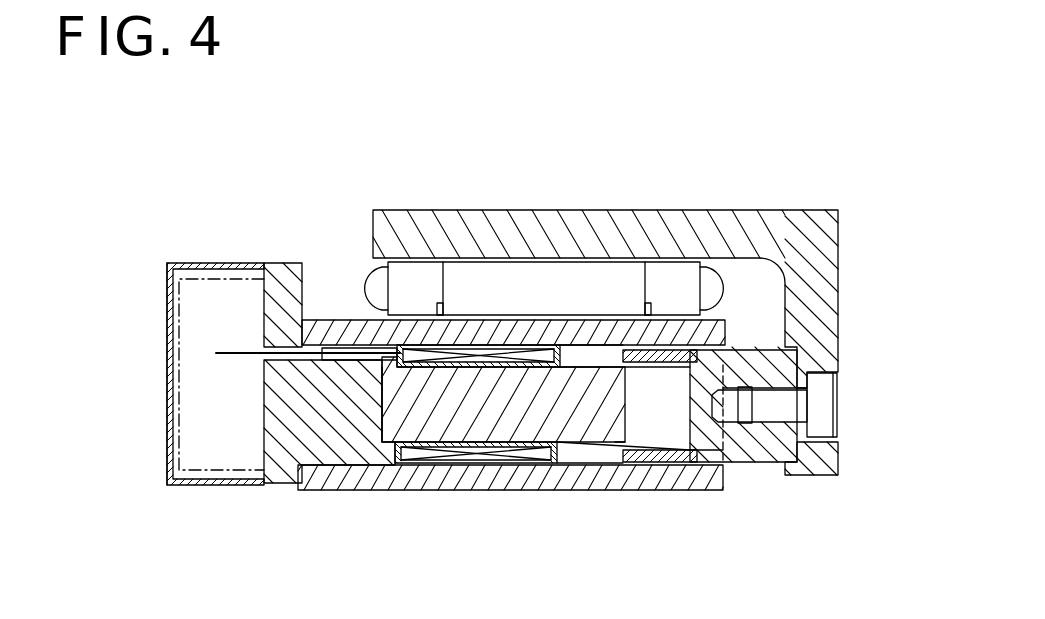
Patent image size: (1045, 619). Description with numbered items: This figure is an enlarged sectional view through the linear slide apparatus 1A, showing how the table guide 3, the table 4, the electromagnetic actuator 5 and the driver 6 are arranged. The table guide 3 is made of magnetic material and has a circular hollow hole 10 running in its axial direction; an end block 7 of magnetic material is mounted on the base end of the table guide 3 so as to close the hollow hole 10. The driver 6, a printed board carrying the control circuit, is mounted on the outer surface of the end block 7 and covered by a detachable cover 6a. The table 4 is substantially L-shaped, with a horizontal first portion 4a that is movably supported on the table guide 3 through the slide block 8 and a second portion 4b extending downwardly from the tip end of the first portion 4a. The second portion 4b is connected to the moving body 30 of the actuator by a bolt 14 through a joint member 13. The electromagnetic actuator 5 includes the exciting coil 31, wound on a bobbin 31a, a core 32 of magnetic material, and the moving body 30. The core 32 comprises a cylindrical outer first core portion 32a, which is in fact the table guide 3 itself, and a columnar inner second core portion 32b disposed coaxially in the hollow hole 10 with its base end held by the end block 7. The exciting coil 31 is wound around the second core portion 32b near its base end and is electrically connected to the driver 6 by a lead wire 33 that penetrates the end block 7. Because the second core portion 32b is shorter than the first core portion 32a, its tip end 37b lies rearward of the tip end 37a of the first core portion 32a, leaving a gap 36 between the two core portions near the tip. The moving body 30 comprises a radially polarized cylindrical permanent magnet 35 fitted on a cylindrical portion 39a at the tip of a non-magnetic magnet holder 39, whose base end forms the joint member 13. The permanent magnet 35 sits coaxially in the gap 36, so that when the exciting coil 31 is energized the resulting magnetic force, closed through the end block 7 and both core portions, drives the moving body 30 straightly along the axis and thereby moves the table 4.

The linear slide apparatus 1A is at (640, 100).
The table guide 3 is at (338, 292).
The table 4 is at (637, 307).
The first portion 4a is at (513, 236).
The second portion 4b is at (818, 298).
The electromagnetic actuator 5 is at (572, 508).
The driver 6 is at (205, 309).
The cover 6a is at (167, 352).
The end block 7 is at (278, 465).
The slide block 8 is at (465, 285).
The hollow hole 10 is at (700, 368).
The joint member 13 is at (765, 452).
The bolt 14 is at (820, 412).
The moving body 30 is at (668, 513).
The exciting coil 31 is at (413, 445).
The bobbin 31a is at (365, 463).
The core 32 is at (477, 465).
The first core portion 32a is at (527, 465).
The second core portion 32b is at (462, 368).
The lead wire 33 is at (236, 350).
The permanent magnet 35 is at (673, 458).
The gap 36 is at (578, 354).
The tip end of first core portion 37a is at (728, 328).
The tip end of second core portion 37b is at (658, 362).
The magnet holder 39 is at (707, 450).
The cylindrical portion 39a is at (620, 458).